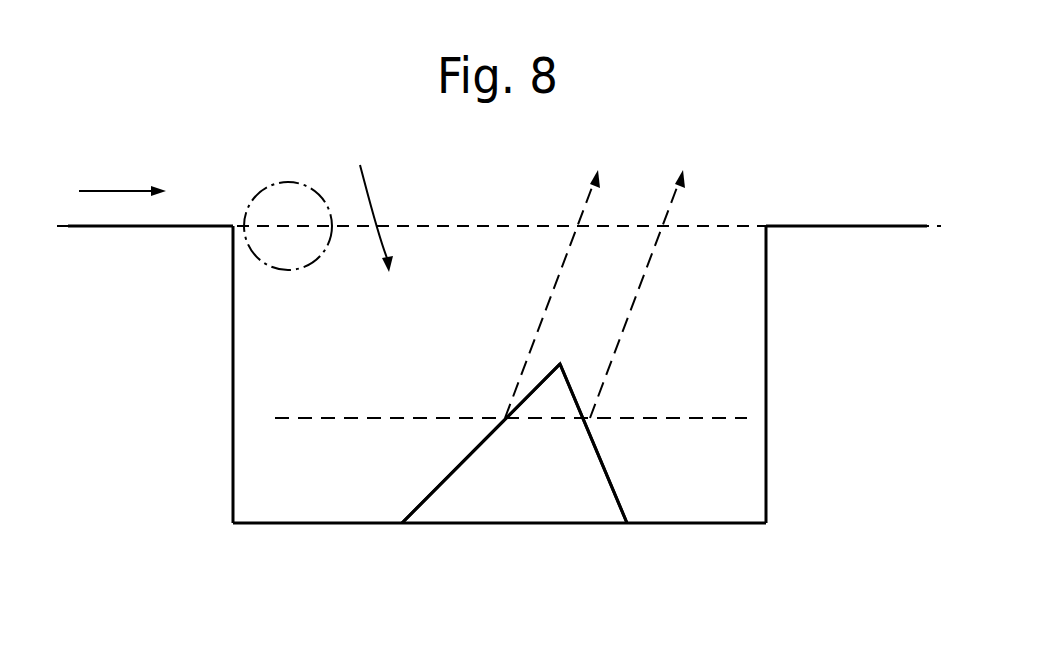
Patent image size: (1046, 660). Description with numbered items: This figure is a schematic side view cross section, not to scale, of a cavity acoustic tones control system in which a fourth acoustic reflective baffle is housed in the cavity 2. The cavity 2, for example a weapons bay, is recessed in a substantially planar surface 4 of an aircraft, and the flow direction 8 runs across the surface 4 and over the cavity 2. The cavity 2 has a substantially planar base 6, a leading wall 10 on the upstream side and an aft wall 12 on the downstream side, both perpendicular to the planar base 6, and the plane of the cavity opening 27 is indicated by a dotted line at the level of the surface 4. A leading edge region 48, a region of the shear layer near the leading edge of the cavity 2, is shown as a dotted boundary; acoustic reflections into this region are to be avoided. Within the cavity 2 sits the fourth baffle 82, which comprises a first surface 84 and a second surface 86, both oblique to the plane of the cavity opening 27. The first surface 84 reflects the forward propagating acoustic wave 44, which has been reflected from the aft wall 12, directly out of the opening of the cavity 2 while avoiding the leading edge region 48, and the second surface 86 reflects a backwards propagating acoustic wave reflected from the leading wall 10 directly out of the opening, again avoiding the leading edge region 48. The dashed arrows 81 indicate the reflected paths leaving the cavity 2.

The cavity 2 is at (373, 203).
The surface 4 is at (118, 228).
The planar base 6 is at (690, 525).
The flow direction 8 is at (110, 190).
The leading wall 10 is at (233, 388).
The aft wall 12 is at (766, 388).
The plane of the cavity opening 27 is at (441, 225).
The acoustic wave 44 is at (655, 417).
The leading edge region 48 is at (285, 268).
The reflected beam path 81 is at (540, 312).
The fourth baffle 82 is at (515, 498).
The first surface 84 is at (605, 458).
The second surface 86 is at (425, 497).